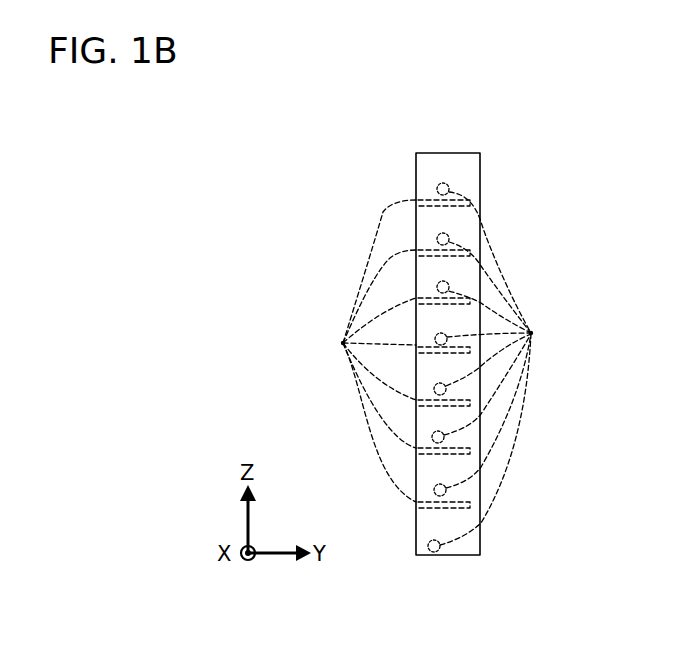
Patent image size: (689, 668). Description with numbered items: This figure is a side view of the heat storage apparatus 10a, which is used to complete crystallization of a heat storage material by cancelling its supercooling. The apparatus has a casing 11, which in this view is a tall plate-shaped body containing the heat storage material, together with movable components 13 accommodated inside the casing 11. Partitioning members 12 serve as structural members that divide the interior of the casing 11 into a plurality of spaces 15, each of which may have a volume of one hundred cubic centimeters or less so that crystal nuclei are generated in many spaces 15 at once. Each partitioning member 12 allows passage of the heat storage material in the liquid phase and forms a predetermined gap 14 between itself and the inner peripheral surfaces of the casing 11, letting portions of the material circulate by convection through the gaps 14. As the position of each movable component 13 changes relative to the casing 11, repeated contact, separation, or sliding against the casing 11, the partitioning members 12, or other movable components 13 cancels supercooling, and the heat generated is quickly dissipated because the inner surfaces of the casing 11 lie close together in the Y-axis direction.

The heat storage apparatus 10a is at (400, 96).
The casing 11 is at (416, 171).
The partitioning member 12 is at (365, 351).
The movable component 13 is at (500, 368).
The gap 14 is at (474, 195).
The space 15 is at (458, 168).